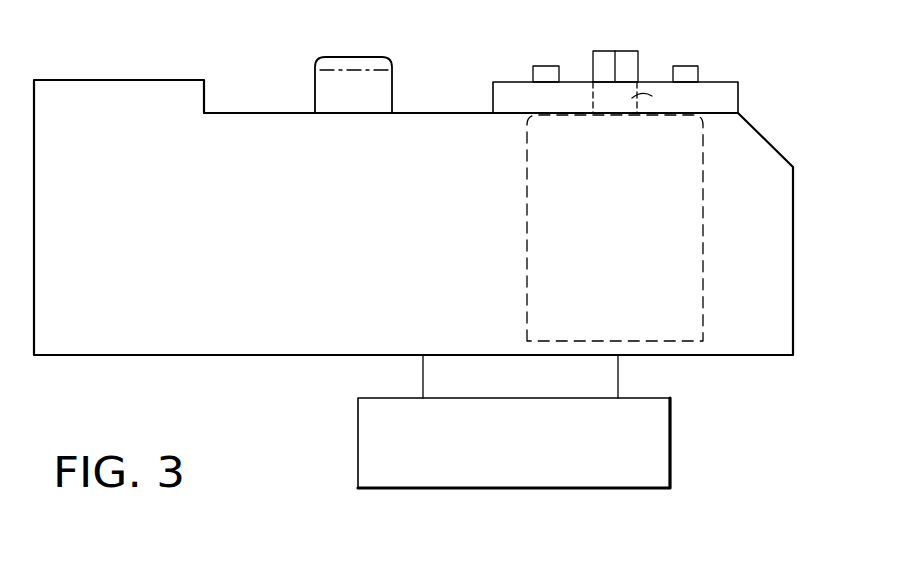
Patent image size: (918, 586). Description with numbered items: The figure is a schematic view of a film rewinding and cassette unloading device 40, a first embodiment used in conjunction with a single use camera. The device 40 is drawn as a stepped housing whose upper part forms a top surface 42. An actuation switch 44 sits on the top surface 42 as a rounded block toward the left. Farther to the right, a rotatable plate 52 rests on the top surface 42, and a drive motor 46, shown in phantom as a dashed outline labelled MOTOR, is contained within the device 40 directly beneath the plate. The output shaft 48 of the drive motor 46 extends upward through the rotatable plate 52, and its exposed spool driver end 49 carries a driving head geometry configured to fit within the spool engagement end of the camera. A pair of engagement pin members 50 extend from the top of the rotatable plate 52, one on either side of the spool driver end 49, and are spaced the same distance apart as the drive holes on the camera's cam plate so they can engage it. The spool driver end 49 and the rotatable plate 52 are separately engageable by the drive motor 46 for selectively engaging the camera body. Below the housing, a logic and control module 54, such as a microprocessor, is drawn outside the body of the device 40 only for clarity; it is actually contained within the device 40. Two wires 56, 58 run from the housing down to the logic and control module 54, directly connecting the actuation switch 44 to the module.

The film rewinding and cassette unloading device 40 is at (712, 455).
The top surface 42 is at (432, 112).
The actuation switch 44 is at (332, 70).
The drive motor 46 is at (675, 310).
The output shaft 48 is at (650, 92).
The spool driver end 49 is at (597, 62).
The engagement pin members 50 is at (533, 70).
The rotatable plate 52 is at (728, 97).
The logic and control module 54 is at (562, 465).
The wire 56 is at (423, 372).
The wire 58 is at (620, 377).